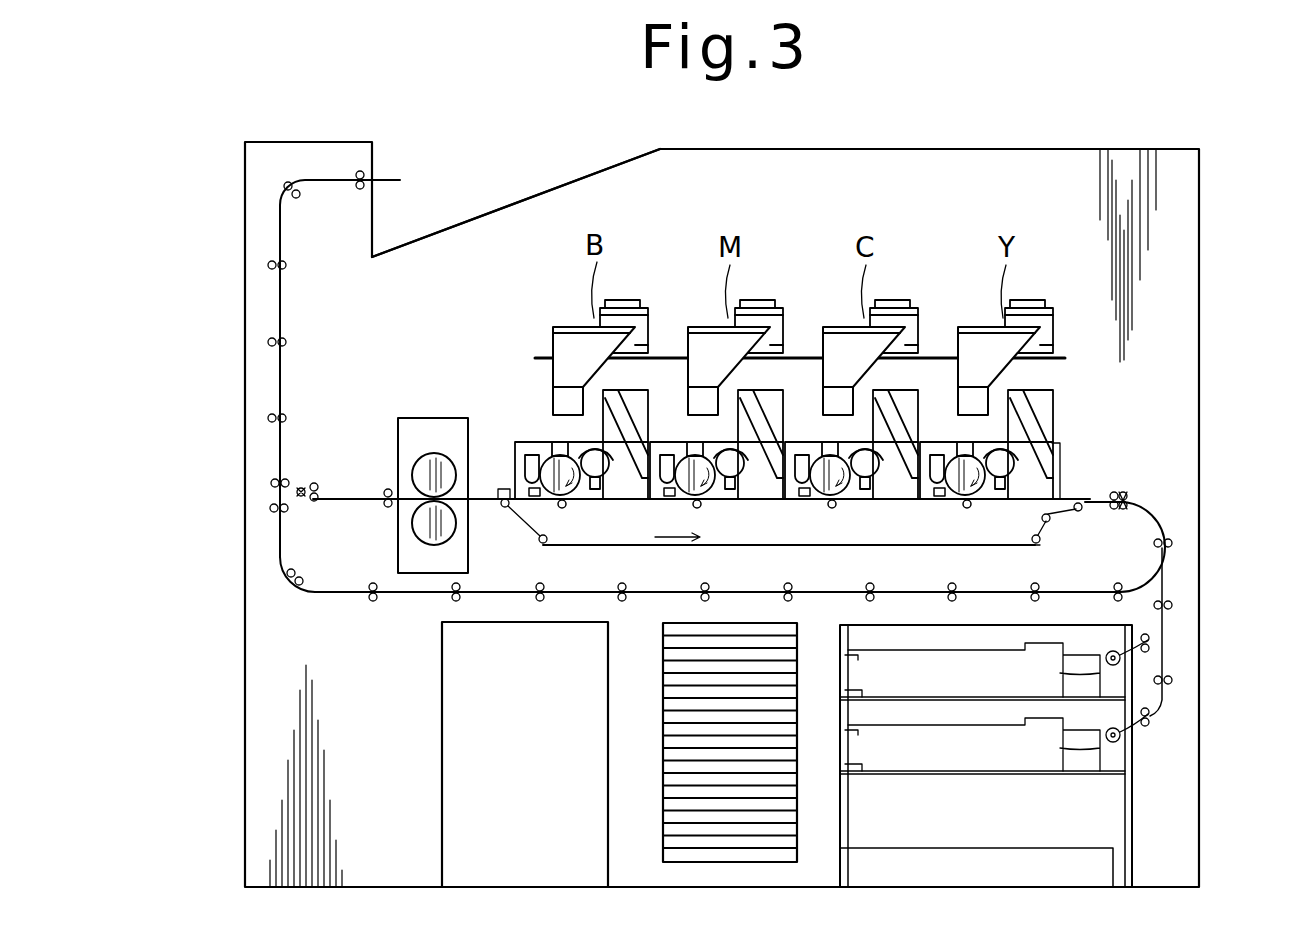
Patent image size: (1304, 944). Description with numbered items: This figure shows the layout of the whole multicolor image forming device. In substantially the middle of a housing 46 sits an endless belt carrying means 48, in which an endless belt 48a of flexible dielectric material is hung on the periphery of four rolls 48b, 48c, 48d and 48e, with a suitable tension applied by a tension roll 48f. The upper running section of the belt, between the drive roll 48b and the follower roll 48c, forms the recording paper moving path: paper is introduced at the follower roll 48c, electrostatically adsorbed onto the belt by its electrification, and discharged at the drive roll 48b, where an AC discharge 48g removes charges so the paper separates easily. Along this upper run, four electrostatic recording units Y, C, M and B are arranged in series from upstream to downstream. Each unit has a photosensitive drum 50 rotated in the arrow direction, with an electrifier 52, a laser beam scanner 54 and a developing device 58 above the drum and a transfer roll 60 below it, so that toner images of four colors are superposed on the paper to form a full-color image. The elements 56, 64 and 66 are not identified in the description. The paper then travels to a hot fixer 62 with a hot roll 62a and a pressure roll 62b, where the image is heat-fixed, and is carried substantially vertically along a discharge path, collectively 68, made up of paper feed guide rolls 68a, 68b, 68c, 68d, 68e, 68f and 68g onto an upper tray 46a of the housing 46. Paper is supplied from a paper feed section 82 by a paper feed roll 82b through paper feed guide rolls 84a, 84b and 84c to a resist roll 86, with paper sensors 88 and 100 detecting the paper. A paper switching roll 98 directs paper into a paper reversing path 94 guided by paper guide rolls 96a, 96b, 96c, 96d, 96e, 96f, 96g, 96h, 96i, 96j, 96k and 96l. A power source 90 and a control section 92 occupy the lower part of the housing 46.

The housing 46 is at (1162, 149).
The upper tray 46a is at (572, 183).
The endless belt carrying means 48 is at (800, 547).
The endless belt 48a is at (1033, 547).
The drive roll 48b is at (503, 508).
The follower roll 48c is at (1082, 511).
The roll 48d is at (1040, 545).
The roll 48e is at (546, 544).
The tension roll 48f is at (1048, 522).
The AC discharge 48g is at (503, 488).
The photosensitive drum 50 is at (590, 492).
The electrifier 52 is at (558, 442).
The laser beam scanner 54 is at (560, 327).
The toner supply rail 56 is at (1065, 355).
The developing device 58 is at (635, 402).
The transfer roll 60 is at (565, 508).
The hot fixer 62 is at (430, 418).
The hot roll 62a is at (455, 443).
The pressure roll 62b is at (420, 538).
The cleaner 64 is at (530, 457).
The discharger 66 is at (534, 498).
The paper return path 68 is at (340, 368).
The paper feed guide roll 68a is at (388, 492).
The paper feed guide roll 68b is at (318, 486).
The paper feed guide roll 68c is at (290, 415).
The paper feed guide roll 68d is at (290, 342).
The paper feed guide roll 68e is at (288, 265).
The paper feed guide roll 68f is at (288, 185).
The paper feed guide roll 68g is at (360, 172).
The paper feed section 82 is at (1135, 775).
The paper feed roll 82b is at (1152, 640).
The paper feed guide roll 84a is at (1172, 680).
The paper feed guide roll 84b is at (1172, 605).
The paper feed guide roll 84c is at (1172, 543).
The resist roll 86 is at (1112, 492).
The paper sensor 88 is at (1126, 495).
The power source 90 is at (442, 740).
The control section 92 is at (663, 740).
The paper reversing path 94 is at (418, 595).
The paper guide roll 96a is at (290, 512).
The paper guide roll 96b is at (295, 585).
The paper guide roll 96c is at (373, 600).
The paper guide roll 96d is at (456, 600).
The paper guide roll 96e is at (540, 600).
The paper guide roll 96f is at (622, 600).
The paper guide roll 96g is at (703, 586).
The paper guide roll 96h is at (786, 586).
The paper guide roll 96i is at (866, 596).
The paper guide roll 96j is at (950, 586).
The paper guide roll 96k is at (1032, 596).
The paper guide roll 96l is at (1115, 596).
The paper switching roll 98 is at (278, 483).
The paper sensor 100 is at (302, 487).